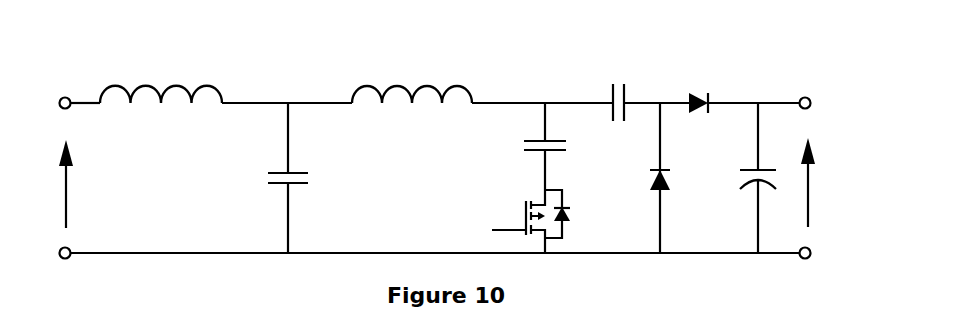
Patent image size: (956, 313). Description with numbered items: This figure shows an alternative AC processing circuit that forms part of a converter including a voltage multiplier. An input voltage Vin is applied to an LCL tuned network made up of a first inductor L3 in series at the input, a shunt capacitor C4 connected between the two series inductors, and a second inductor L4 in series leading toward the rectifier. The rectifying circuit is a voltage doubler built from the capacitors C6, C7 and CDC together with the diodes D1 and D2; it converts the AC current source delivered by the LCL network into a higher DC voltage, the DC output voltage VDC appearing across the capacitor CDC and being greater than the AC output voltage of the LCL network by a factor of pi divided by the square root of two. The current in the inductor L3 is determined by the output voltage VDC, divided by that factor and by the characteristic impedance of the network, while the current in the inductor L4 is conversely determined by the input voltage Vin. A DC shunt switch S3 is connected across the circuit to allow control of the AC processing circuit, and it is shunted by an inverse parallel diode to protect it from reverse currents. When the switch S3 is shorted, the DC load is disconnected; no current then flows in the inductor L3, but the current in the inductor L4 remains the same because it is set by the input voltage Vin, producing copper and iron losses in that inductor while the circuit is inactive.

The inductor L3 is at (161, 79).
The inductor L4 is at (412, 79).
The capacitor C4 is at (304, 178).
The capacitor C6 is at (617, 88).
The capacitor C7 is at (527, 146).
The diode D1 is at (638, 178).
The diode D2 is at (701, 84).
The DC shunt switch S3 is at (529, 221).
The capacitor CDC is at (738, 178).
The input voltage Vin is at (49, 184).
The DC output voltage VDC is at (826, 182).